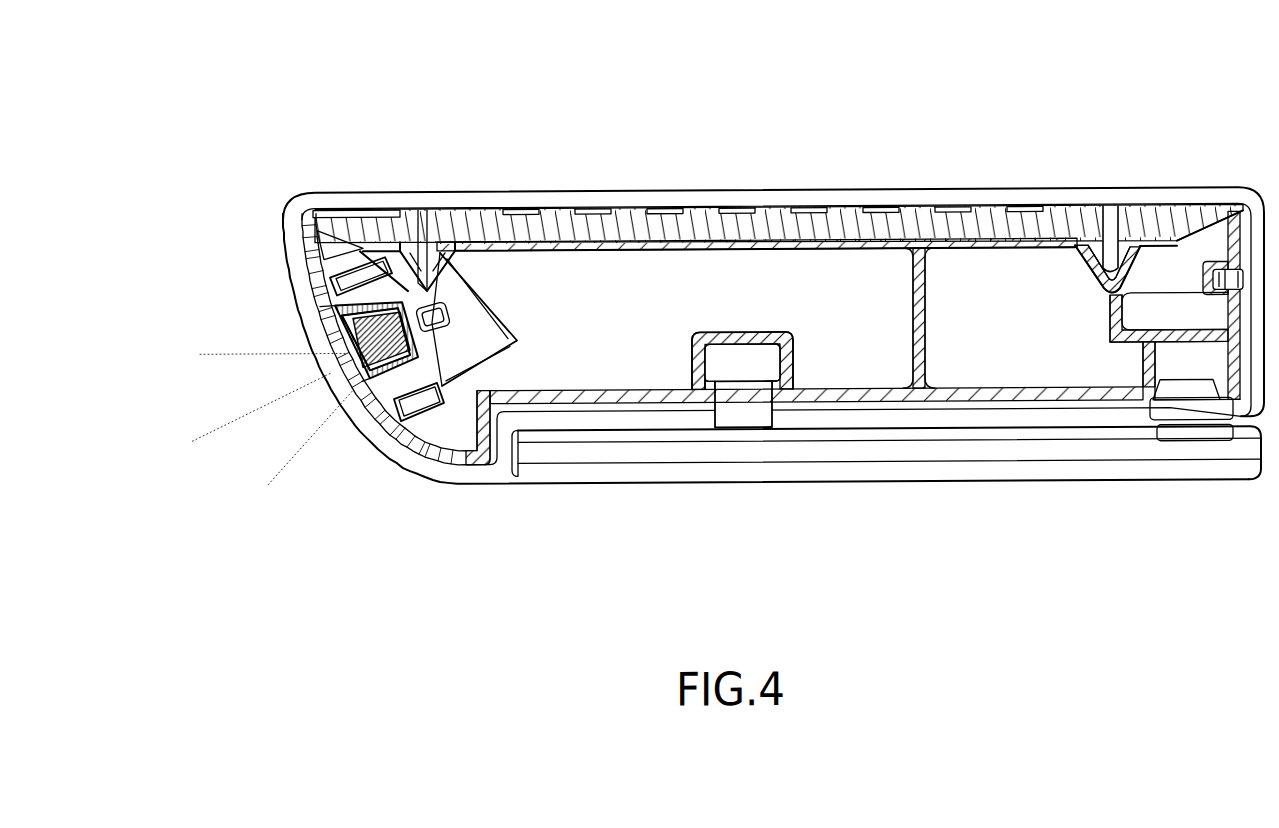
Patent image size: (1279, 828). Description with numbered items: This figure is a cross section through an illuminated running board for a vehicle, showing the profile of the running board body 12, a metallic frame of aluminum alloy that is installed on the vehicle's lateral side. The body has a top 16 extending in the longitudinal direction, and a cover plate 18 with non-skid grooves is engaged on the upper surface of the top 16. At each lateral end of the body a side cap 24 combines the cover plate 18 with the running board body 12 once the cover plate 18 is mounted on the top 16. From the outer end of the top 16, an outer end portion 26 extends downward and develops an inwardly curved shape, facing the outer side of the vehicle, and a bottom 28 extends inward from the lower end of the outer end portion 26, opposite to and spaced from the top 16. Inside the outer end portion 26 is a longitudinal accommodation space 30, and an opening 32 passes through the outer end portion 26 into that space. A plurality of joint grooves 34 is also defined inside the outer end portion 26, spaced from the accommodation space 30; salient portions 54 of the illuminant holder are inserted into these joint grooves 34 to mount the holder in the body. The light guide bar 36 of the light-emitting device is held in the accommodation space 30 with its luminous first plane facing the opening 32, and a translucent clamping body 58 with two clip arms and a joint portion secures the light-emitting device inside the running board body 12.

The running board body 12 is at (600, 398).
The top 16 is at (822, 248).
The cover plate 18 is at (985, 222).
The side cap 24 is at (1215, 190).
The outer end portion 26 is at (302, 266).
The bottom 28 is at (857, 402).
The accommodation space 30 is at (397, 373).
The opening 32 is at (337, 353).
The joint grooves 34 is at (420, 235).
The light guide bar 36 is at (400, 287).
The salient portions 54 is at (352, 262).
The translucent clamping body 58 is at (316, 296).